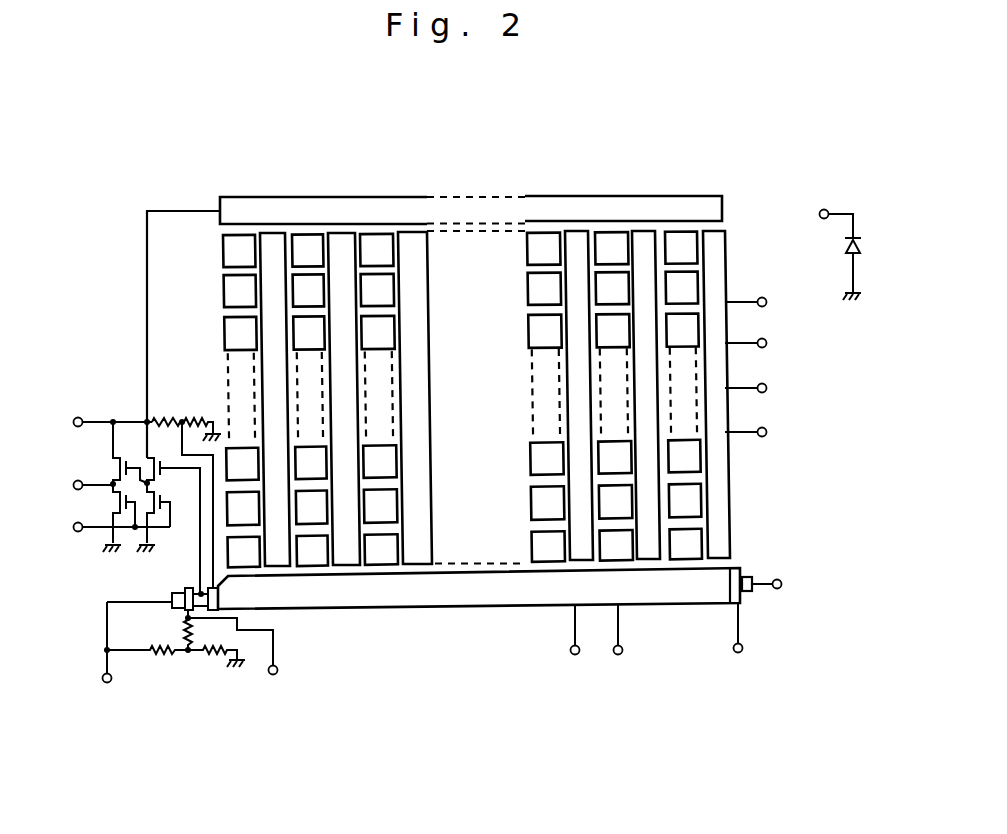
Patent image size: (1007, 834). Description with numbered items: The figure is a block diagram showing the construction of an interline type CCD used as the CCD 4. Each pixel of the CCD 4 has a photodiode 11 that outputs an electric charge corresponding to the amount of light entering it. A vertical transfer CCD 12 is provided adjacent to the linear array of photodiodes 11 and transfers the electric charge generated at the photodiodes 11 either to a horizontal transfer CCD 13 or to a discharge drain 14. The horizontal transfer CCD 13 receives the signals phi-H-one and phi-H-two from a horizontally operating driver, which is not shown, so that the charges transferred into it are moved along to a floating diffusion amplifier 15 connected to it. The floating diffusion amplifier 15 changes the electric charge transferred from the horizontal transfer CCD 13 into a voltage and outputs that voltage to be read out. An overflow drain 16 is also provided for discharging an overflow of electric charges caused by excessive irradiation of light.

The CCD 4 is at (122, 206).
The photodiode 11 is at (240, 248).
The vertical transfer CCD 12 is at (272, 390).
The horizontal transfer CCD 13 is at (333, 597).
The discharge drain 14 is at (617, 212).
The floating diffusion amplifier 15 is at (194, 591).
The overflow drain 16 is at (863, 250).